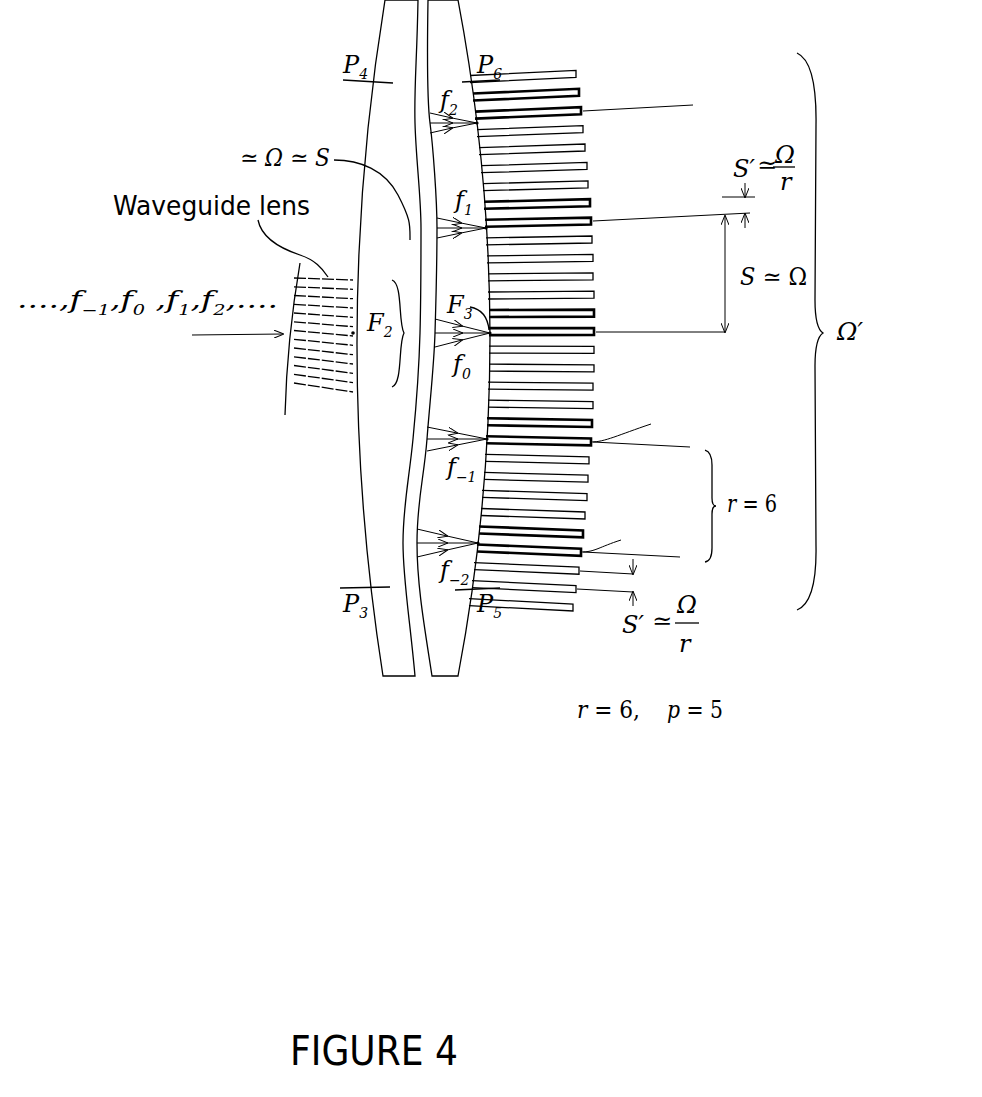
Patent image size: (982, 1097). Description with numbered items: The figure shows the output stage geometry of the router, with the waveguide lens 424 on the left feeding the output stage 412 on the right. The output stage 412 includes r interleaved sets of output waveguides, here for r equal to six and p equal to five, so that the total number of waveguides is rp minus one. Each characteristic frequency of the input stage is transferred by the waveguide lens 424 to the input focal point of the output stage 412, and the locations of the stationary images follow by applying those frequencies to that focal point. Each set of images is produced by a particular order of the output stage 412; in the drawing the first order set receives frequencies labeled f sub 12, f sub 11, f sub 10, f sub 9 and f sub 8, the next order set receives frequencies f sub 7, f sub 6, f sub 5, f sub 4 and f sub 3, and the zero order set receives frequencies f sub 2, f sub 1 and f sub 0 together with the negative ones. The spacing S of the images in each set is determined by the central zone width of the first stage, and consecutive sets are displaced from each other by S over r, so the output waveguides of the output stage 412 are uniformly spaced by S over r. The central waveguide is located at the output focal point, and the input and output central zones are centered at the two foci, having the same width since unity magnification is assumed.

The waveguide lens 424 is at (377, 640).
The output stage 412 is at (535, 370).
The output waveguide Q'2 for frequency f12 12 is at (580, 44).
The output waveguide Q'1 for frequency f7 7 is at (581, 68).
The output waveguide Q'0 for frequency f2 2 is at (587, 93).
The output waveguide Q'2 for frequency f11 11 is at (593, 153).
The output waveguide Q'1 for frequency f6 6 is at (595, 177).
The output waveguide Q'0 for frequency f1 1 is at (598, 201).
The output waveguide Q'2 for frequency f10 10 is at (597, 262).
The output waveguide Q'1 for frequency f5 5 is at (598, 286).
The output waveguide Q'0 for frequency f0 0 is at (603, 311).
The output waveguide Q'2 for frequency f9 9 is at (597, 373).
The output waveguide Q'1 for frequency f4 4 is at (597, 397).
The output waveguide Q'2 for frequency f8 8 is at (585, 484).
The output waveguide Q'1 for frequency f3 3 is at (584, 510).